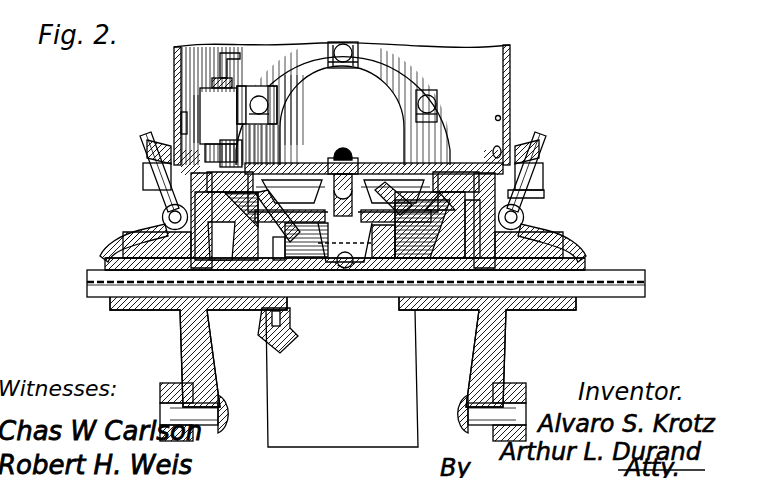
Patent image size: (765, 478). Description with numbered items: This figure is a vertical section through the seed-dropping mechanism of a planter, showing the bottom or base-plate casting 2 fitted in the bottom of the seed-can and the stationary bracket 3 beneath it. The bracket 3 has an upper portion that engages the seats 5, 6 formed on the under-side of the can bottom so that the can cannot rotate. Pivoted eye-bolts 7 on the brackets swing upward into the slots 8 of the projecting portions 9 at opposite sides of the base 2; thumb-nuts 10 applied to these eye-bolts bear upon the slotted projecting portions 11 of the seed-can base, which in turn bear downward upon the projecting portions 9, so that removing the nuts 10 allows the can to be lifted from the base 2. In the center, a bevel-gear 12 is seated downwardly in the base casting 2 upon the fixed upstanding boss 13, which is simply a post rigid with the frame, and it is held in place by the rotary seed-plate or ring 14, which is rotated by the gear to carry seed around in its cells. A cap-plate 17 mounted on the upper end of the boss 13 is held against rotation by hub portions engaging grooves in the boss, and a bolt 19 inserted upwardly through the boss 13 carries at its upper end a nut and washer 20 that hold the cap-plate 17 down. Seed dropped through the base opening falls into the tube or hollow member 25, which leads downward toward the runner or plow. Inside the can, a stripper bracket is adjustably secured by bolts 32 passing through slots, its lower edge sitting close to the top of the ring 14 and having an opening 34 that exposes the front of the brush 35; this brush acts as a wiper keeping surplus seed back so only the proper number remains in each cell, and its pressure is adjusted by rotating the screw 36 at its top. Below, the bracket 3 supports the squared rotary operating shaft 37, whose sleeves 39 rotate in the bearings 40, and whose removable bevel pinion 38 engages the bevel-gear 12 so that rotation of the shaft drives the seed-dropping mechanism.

The base-plate or casting 2 is at (150, 200).
The stationary bracket 3 is at (387, 89).
The seat 5 is at (333, 128).
The seat 6 is at (475, 215).
The pivoted eye-bolt 7 is at (162, 212).
The slot 8 is at (140, 185).
The projecting portion 9 is at (548, 194).
The thumb-nut 10 is at (140, 150).
The projecting portion 11 is at (135, 163).
The bevel-gear 12 is at (408, 268).
The boss 13 is at (345, 245).
The rotary seed-plate or ring 14 is at (460, 178).
The cap-plate 17 is at (383, 163).
The bolt 19 is at (352, 156).
The nut and washer 20 is at (338, 150).
The tube or hollow member 25 is at (262, 430).
The bolt 32 is at (352, 45).
The opening 34 is at (220, 150).
The brush 35 is at (178, 132).
The screw 36 is at (232, 52).
The rotary operating shaft 37 is at (632, 298).
The bevel pinion 38 is at (285, 335).
The sleeve 39 is at (100, 255).
The bearing 40 is at (170, 312).